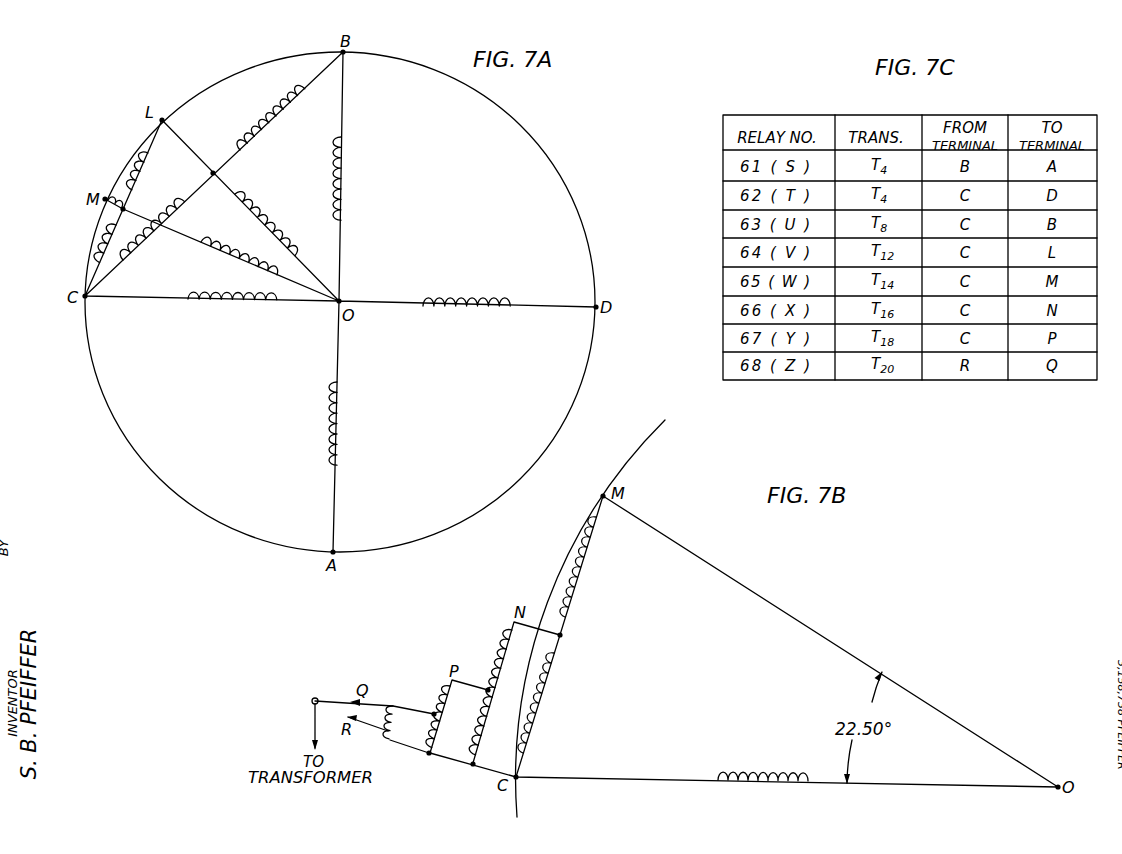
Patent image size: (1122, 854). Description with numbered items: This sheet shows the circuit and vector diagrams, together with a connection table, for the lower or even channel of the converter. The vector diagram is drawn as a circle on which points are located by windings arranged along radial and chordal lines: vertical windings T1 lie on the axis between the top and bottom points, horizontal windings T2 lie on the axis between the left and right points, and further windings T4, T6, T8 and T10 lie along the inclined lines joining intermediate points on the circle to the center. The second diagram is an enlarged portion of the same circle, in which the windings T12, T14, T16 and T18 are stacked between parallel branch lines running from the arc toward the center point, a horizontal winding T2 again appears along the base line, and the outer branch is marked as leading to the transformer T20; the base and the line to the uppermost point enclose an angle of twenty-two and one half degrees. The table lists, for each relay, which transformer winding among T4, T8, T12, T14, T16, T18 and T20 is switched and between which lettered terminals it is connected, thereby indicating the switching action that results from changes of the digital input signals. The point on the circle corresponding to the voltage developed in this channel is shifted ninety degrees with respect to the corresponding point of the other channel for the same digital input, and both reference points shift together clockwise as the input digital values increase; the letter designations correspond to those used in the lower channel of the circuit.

In FIG. 7A, the transformer winding T1 is at (353, 301).
In FIG. 7A, the transformer winding T2 is at (349, 314).
In FIG. 7B, the transformer winding T2 is at (763, 775).
In FIG. 7A, the transformer winding T4 is at (212, 172).
In FIG. 7A, the transformer winding T6 is at (266, 224).
In FIG. 7A, the transformer winding T8 is at (132, 207).
In FIG. 7A, the transformer winding T10 is at (239, 251).
In FIG. 7B, the transformer winding T12 is at (570, 635).
In FIG. 7B, the transformer winding T14 is at (492, 663).
In FIG. 7B, the transformer winding T16 is at (437, 695).
In FIG. 7B, the transformer winding T18 is at (404, 722).
In FIG. 7B, the transformer T20 is at (311, 797).